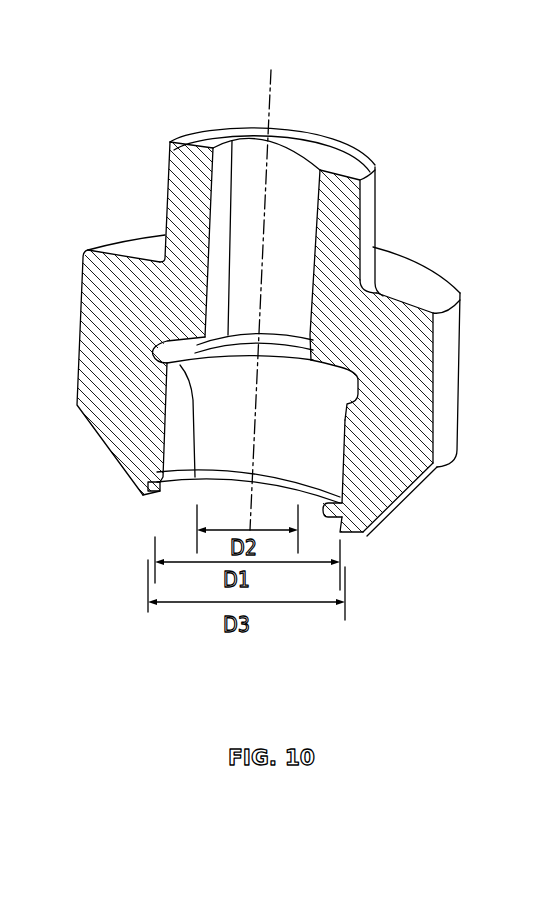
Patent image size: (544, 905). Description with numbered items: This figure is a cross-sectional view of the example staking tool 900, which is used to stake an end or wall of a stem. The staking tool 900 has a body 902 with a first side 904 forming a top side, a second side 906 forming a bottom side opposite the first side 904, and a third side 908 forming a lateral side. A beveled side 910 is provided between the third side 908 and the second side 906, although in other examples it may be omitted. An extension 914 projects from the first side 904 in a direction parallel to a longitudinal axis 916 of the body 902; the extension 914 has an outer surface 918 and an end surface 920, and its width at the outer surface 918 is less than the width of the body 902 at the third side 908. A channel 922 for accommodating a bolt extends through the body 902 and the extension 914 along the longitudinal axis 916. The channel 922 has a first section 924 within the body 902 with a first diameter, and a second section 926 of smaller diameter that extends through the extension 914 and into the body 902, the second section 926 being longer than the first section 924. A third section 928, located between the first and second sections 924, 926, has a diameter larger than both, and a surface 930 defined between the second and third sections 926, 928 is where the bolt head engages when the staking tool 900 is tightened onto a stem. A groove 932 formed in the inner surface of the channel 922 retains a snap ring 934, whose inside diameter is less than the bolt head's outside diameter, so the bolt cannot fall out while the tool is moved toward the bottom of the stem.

The staking tool 900 is at (337, 83).
The body 902 is at (103, 412).
The first side 904 is at (141, 247).
The second side 906 is at (147, 498).
The third side 908 is at (447, 352).
The beveled side 910 is at (423, 484).
The extension 914 is at (348, 206).
The longitudinal axis 916 is at (264, 106).
The outer surface 918 is at (376, 248).
The end surface 920 is at (342, 153).
The channel 922 is at (234, 130).
The first section 924 is at (195, 406).
The second section 926 is at (231, 245).
The third section 928 is at (157, 352).
The surface 930 is at (323, 367).
The groove 932 is at (366, 530).
The snap ring 934 is at (135, 482).